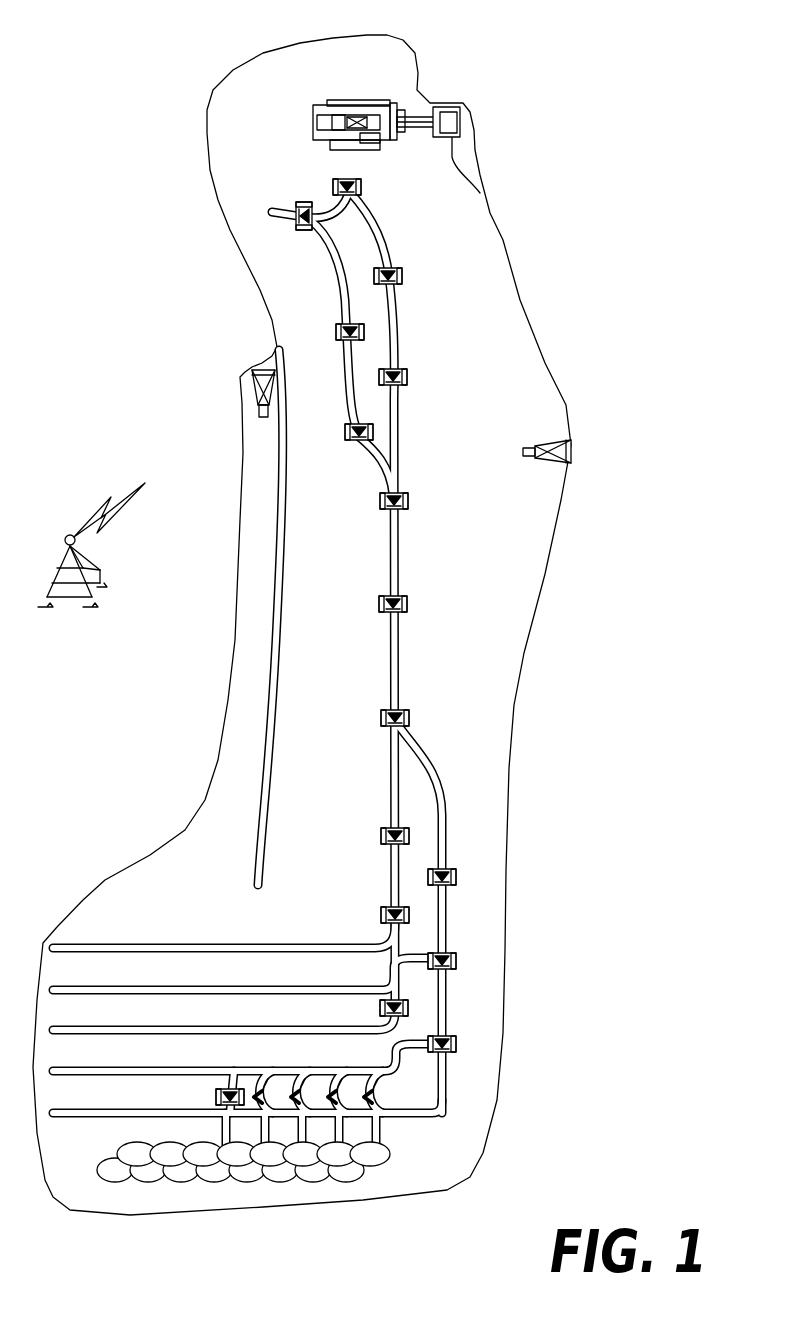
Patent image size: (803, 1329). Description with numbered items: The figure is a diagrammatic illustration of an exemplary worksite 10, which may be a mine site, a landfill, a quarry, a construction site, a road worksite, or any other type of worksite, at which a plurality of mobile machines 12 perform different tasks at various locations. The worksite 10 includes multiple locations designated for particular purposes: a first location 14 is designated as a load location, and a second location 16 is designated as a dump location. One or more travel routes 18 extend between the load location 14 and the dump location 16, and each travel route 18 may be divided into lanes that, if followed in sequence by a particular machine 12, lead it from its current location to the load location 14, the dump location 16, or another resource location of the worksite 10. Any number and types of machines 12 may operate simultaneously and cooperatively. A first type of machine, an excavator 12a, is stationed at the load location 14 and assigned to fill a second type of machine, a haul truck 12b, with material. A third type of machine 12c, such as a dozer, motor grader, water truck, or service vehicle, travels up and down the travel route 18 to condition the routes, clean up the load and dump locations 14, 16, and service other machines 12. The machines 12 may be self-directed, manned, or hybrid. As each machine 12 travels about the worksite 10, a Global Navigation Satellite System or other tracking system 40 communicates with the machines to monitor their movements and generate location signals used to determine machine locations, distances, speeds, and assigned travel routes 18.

The worksite 10 is at (628, 983).
The mobile machines 12 is at (401, 200).
The excavator 12a is at (315, 105).
The haul truck 12b is at (408, 498).
The dozer, motor grader, water truck, or service vehicle 12c is at (247, 364).
The load location 14 is at (272, 142).
The dump location 16 is at (434, 1166).
The travel route 18 is at (395, 655).
The tracking system 40 is at (65, 542).